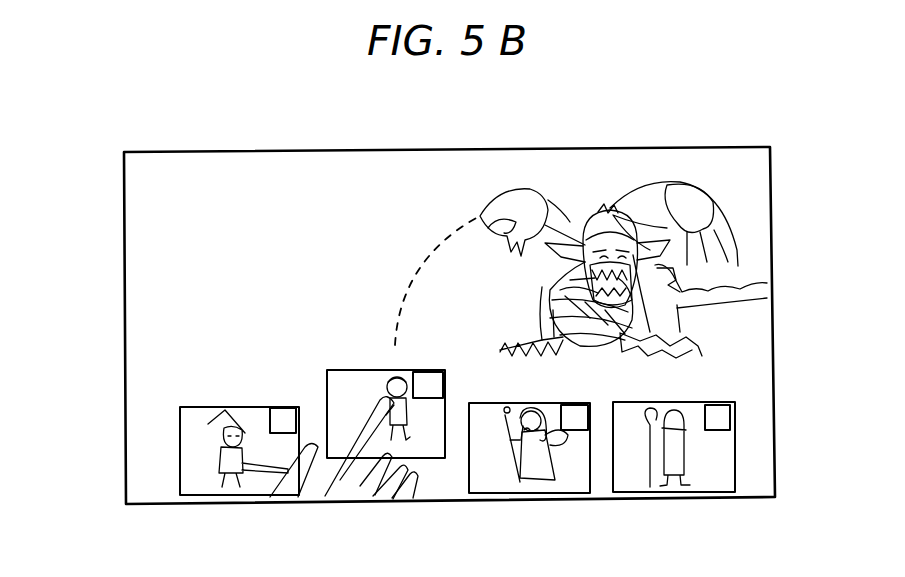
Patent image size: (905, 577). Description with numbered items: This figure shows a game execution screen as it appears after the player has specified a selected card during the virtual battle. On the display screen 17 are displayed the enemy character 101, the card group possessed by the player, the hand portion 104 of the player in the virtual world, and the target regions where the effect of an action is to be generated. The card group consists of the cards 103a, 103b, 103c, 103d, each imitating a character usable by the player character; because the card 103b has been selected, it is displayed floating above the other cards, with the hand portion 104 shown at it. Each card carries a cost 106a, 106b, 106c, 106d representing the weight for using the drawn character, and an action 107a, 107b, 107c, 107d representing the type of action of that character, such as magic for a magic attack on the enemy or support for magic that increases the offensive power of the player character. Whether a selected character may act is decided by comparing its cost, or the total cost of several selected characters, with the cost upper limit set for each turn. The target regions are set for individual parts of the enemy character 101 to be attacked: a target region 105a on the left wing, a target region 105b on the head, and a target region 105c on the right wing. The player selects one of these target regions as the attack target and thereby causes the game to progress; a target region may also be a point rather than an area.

The display screen 17 is at (693, 148).
The enemy character 101 is at (530, 183).
The card 103a is at (222, 446).
The card 103b is at (365, 370).
The card 103c is at (527, 453).
The card 103d is at (681, 453).
The hand portion 104 is at (330, 498).
The target region 105a is at (480, 203).
The target region 105b is at (595, 207).
The target region 105c is at (710, 196).
The cost 106a is at (283, 407).
The cost 106b is at (437, 371).
The cost 106c is at (576, 403).
The cost 106d is at (725, 403).
The action 107a is at (185, 407).
The action 107b is at (340, 370).
The action 107c is at (480, 403).
The action 107d is at (631, 402).